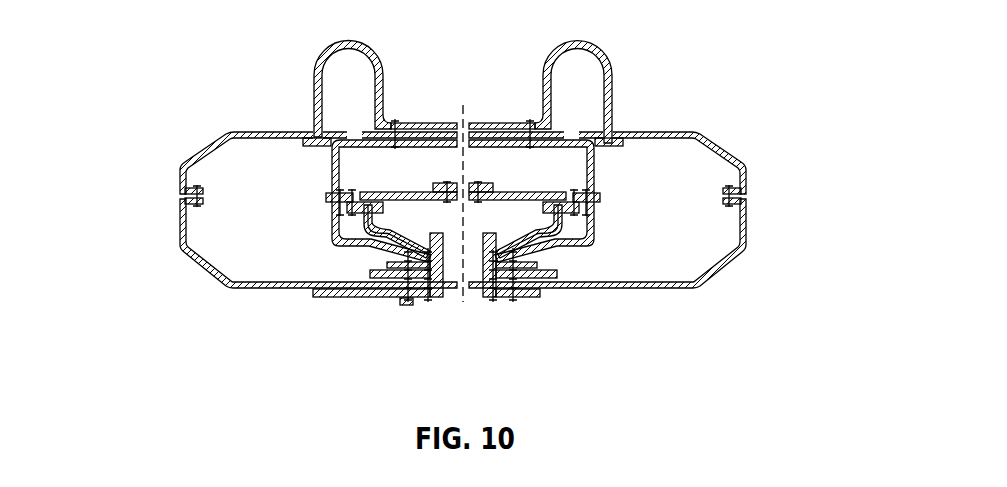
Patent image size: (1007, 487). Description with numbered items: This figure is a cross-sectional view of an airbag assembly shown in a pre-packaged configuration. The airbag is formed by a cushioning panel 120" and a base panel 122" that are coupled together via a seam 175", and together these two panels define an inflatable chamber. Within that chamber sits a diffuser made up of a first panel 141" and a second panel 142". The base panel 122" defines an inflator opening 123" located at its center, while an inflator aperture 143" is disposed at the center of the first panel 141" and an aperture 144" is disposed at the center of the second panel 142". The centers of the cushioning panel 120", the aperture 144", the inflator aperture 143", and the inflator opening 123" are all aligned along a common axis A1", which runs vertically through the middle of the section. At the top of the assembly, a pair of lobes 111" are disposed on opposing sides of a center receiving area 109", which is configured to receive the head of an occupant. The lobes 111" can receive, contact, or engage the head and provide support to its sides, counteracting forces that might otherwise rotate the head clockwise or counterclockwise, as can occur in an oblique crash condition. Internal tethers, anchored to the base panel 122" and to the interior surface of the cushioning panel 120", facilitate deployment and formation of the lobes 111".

The center receiving area 109 is at (443, 122).
The axis A1 is at (462, 150).
The aperture 144 is at (468, 182).
The second panel 142 is at (370, 192).
The lobes 111 is at (613, 79).
The cushioning panel 120 is at (688, 131).
The seam 175 is at (184, 196).
The base panel 122 is at (677, 289).
The first panel 141 is at (422, 268).
The inflator aperture 143 is at (453, 244).
The inflator opening 123 is at (477, 294).